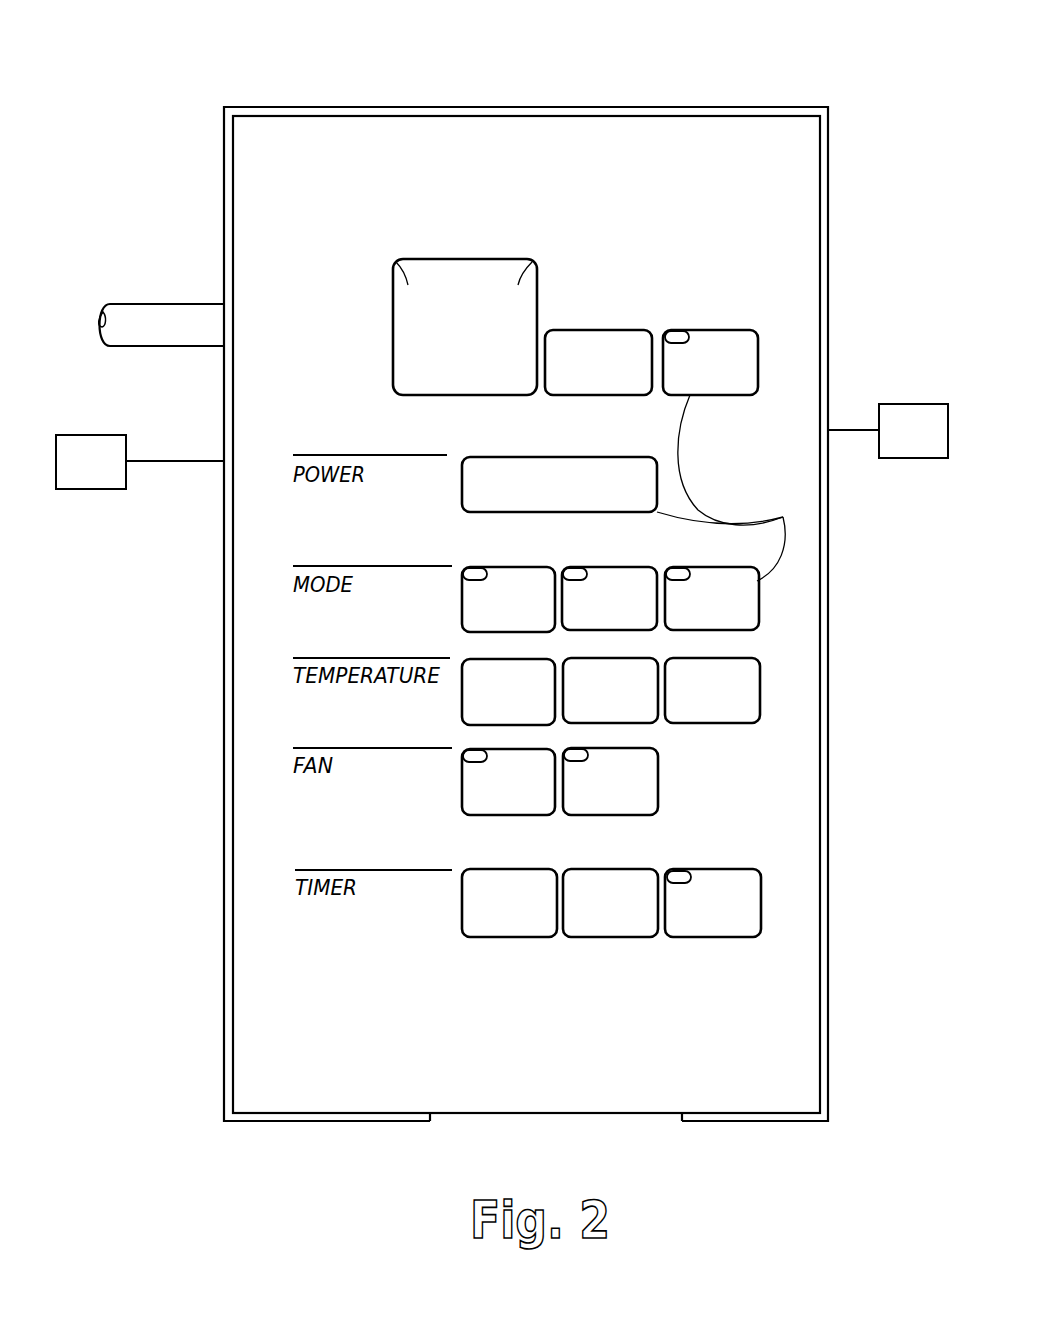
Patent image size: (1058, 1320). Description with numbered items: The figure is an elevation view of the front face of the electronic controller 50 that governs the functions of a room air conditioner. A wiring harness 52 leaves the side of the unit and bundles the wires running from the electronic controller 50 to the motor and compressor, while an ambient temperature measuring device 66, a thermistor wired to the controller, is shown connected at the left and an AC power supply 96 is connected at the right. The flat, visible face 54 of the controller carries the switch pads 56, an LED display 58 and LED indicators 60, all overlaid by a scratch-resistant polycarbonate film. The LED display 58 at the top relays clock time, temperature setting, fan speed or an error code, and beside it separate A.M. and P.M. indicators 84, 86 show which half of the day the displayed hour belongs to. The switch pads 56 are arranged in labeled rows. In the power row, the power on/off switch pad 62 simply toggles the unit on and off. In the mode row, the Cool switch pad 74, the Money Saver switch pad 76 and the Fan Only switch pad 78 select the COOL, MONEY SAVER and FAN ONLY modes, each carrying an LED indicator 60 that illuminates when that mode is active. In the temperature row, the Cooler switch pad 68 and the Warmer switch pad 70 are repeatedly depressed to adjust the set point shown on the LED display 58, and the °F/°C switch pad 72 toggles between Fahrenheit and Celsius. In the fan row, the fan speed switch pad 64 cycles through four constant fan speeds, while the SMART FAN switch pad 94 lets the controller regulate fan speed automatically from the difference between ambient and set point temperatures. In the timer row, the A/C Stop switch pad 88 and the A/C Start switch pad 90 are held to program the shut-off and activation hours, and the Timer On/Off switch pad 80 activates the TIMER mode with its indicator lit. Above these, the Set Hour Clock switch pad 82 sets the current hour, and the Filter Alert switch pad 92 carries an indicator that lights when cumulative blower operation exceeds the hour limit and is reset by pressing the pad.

The electronic controller 50 is at (813, 88).
The wiring harness 52 is at (152, 303).
The flat visible face 54 is at (282, 170).
The switch pads 56 is at (726, 488).
The LED display 58 is at (475, 334).
The LED indicators 60 is at (575, 757).
The power on/off switch pad 62 is at (555, 459).
The fan speed switch pad 64 is at (462, 775).
The ambient temperature measuring device 66 is at (87, 435).
The Cooler switch pad 68 is at (462, 672).
The Warmer switch pad 70 is at (613, 668).
The °F/°C switch pad 72 is at (760, 683).
The Cool switch pad 74 is at (503, 572).
The Money Saver switch pad 76 is at (605, 572).
The Fan Only switch pad 78 is at (708, 572).
The Timer On/Off switch pad 80 is at (708, 873).
The Set Hour Clock switch pad 82 is at (591, 334).
The A.M. indicator 84 is at (396, 262).
The P.M. indicator 86 is at (532, 262).
The A/C Stop switch pad 88 is at (493, 873).
The A/C Start switch pad 90 is at (596, 873).
The Filter Alert switch pad 92 is at (707, 334).
The SMART FAN switch pad 94 is at (655, 775).
The AC power supply 96 is at (920, 404).